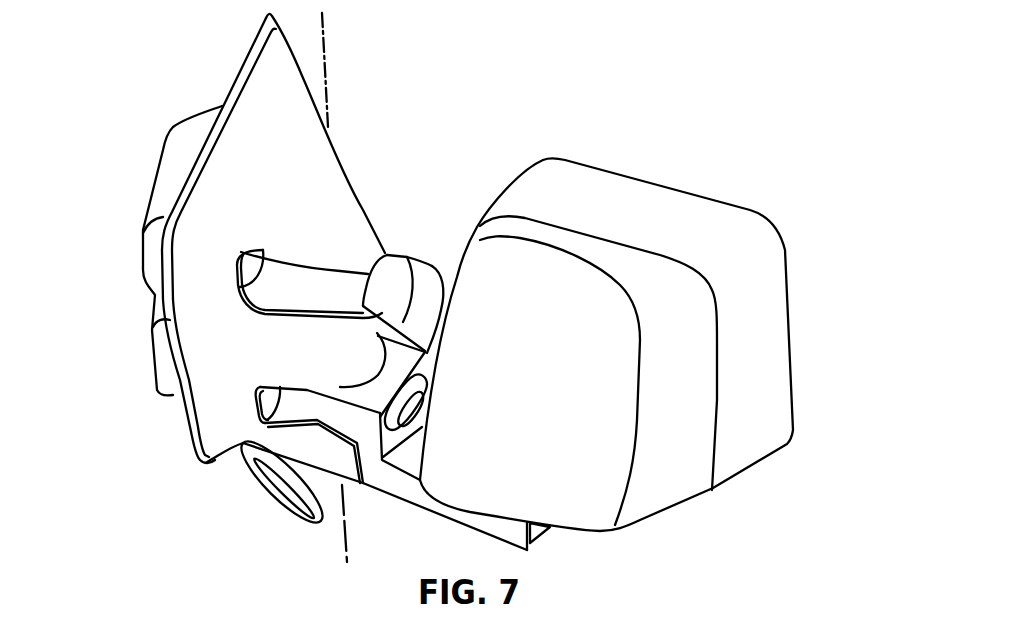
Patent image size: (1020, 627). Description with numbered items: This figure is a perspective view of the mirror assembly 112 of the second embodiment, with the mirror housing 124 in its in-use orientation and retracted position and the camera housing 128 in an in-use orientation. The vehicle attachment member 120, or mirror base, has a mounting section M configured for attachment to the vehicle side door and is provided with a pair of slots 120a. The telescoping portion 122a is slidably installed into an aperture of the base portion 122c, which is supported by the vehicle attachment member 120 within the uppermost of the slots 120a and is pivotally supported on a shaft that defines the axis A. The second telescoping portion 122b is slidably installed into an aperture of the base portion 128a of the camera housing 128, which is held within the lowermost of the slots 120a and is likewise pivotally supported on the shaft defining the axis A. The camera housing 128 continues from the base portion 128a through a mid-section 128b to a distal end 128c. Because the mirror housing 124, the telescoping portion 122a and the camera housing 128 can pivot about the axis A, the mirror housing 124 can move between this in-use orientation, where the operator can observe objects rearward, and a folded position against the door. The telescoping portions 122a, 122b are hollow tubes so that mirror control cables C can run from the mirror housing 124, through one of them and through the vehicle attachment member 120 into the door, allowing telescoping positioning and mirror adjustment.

The mirror assembly 112 is at (527, 100).
The vehicle attachment member 120 is at (263, 103).
The slots 120a is at (264, 262).
The telescoping portion 122a is at (407, 278).
The telescoping portion 122b is at (412, 398).
The base portion 122c is at (388, 252).
The mirror housing 124 is at (605, 192).
The camera housing 128 is at (425, 514).
The base portion 128a is at (338, 417).
The mid-section 128b is at (390, 478).
The distal end 128c is at (540, 530).
The axis A is at (327, 67).
The mounting section M is at (173, 165).
The mirror control cables C is at (265, 495).